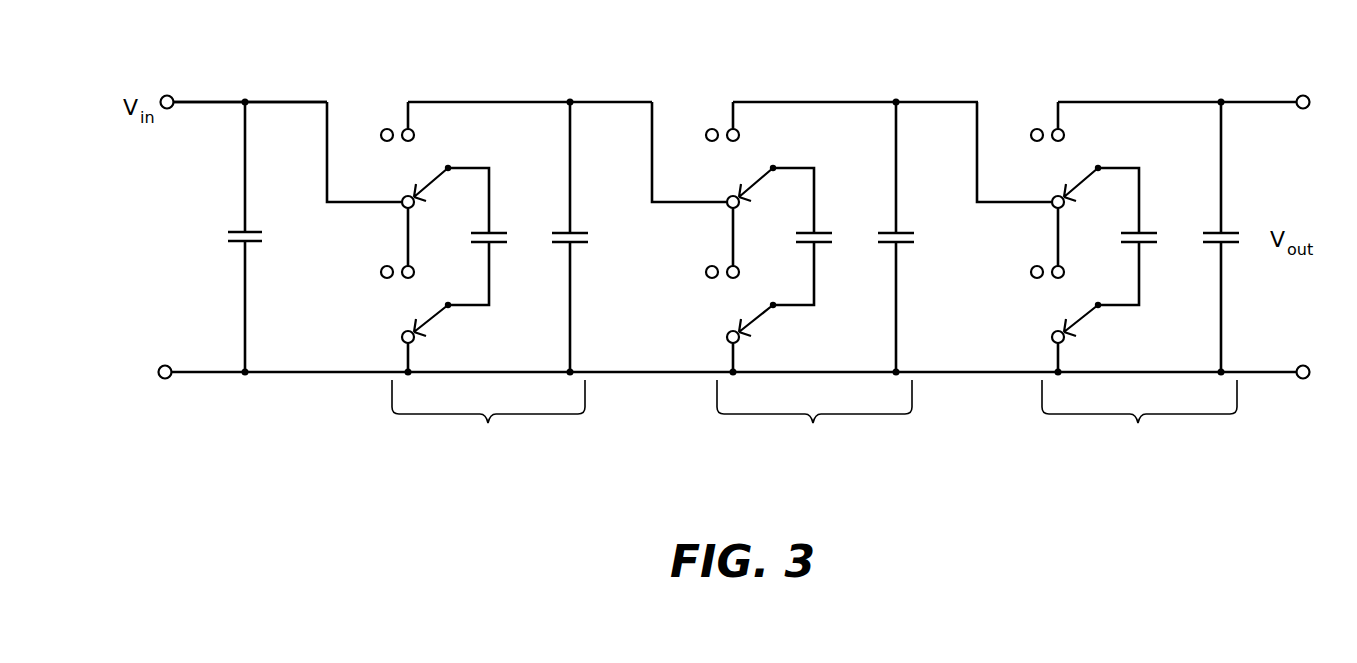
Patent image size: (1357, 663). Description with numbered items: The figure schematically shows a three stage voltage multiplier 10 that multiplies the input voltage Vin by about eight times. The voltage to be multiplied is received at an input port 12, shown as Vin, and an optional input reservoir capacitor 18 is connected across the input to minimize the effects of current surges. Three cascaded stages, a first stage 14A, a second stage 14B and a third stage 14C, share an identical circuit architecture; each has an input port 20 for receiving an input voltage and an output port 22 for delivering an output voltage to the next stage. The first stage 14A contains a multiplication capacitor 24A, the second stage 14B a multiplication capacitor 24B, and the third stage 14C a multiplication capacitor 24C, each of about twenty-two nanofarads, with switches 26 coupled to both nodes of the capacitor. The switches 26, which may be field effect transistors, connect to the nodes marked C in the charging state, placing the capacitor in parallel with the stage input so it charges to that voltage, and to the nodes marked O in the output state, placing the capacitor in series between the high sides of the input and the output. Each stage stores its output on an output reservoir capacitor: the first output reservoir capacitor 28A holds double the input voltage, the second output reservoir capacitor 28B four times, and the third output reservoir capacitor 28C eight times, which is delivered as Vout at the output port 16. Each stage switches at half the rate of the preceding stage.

The voltage multiplier 10 is at (236, 49).
The input port 12 is at (172, 288).
The first stage 14A is at (488, 416).
The second stage 14B is at (814, 416).
The third stage 14C is at (1139, 416).
The output port 16 is at (1315, 162).
The input reservoir capacitor 18 is at (222, 185).
The input port 20 is at (320, 153).
The output port 22 is at (577, 187).
The multiplication capacitor 24A is at (507, 217).
The multiplication capacitor 24B is at (832, 217).
The multiplication capacitor 24C is at (1157, 217).
The switches 26 is at (428, 182).
The first output reservoir capacitor 28A is at (585, 252).
The second output reservoir capacitor 28B is at (910, 252).
The third output reservoir capacitor 28C is at (1235, 252).